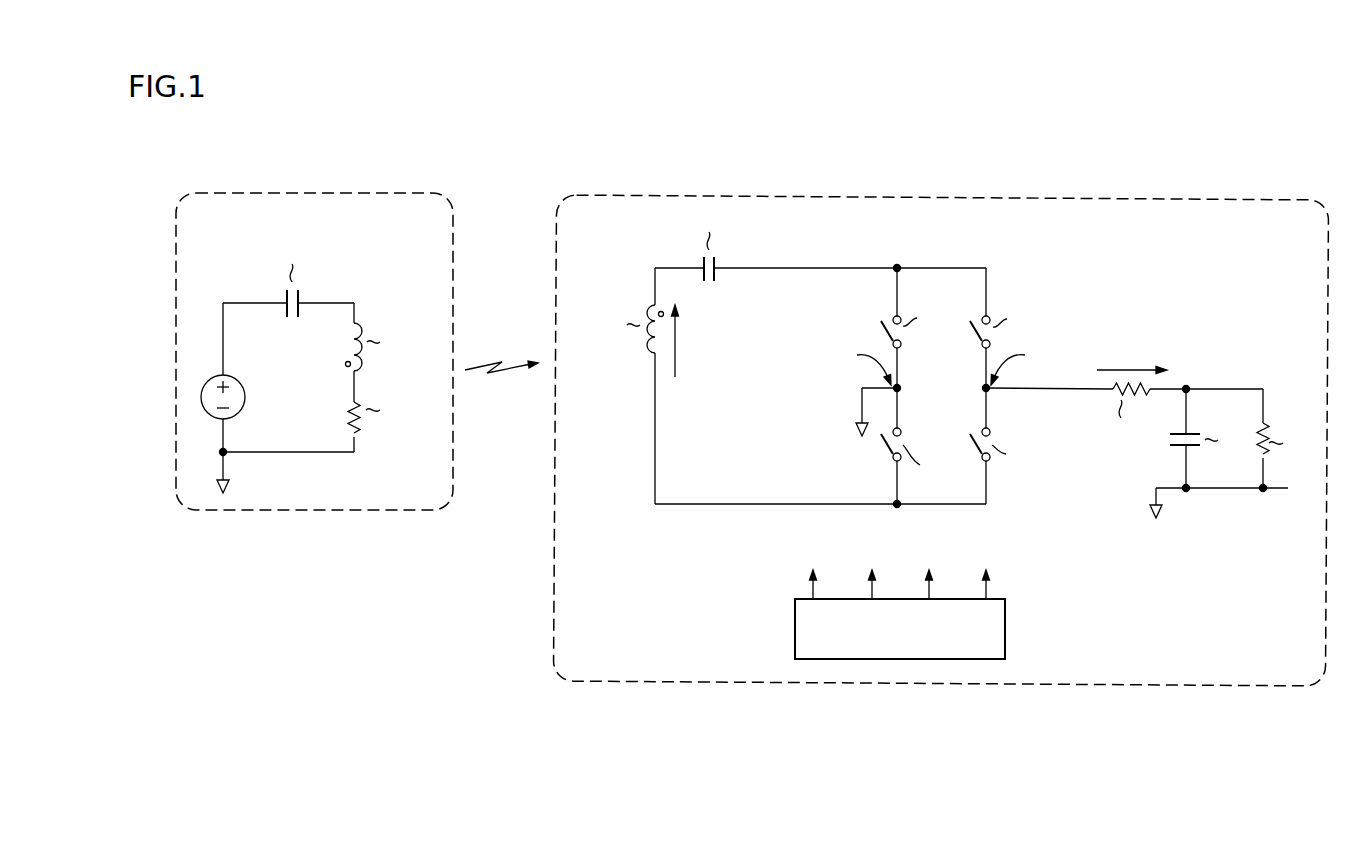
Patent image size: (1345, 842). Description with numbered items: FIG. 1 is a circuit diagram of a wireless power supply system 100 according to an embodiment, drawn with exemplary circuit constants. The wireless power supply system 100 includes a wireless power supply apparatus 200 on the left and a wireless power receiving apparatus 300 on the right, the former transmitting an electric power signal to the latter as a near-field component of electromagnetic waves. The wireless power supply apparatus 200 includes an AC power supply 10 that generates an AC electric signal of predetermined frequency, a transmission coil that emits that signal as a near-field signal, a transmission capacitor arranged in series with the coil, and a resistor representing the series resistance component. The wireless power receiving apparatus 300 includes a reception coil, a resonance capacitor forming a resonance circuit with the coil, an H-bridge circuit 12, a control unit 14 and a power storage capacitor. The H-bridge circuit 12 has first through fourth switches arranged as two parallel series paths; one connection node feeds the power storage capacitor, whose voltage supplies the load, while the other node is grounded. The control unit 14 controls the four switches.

The wireless power supply system 100 is at (772, 830).
The wireless power supply apparatus 200 is at (292, 511).
The wireless power receiving apparatus 300 is at (1065, 684).
The AC power supply 10 is at (245, 397).
The H-bridge circuit 12 is at (1012, 268).
The control unit 14 is at (1005, 620).